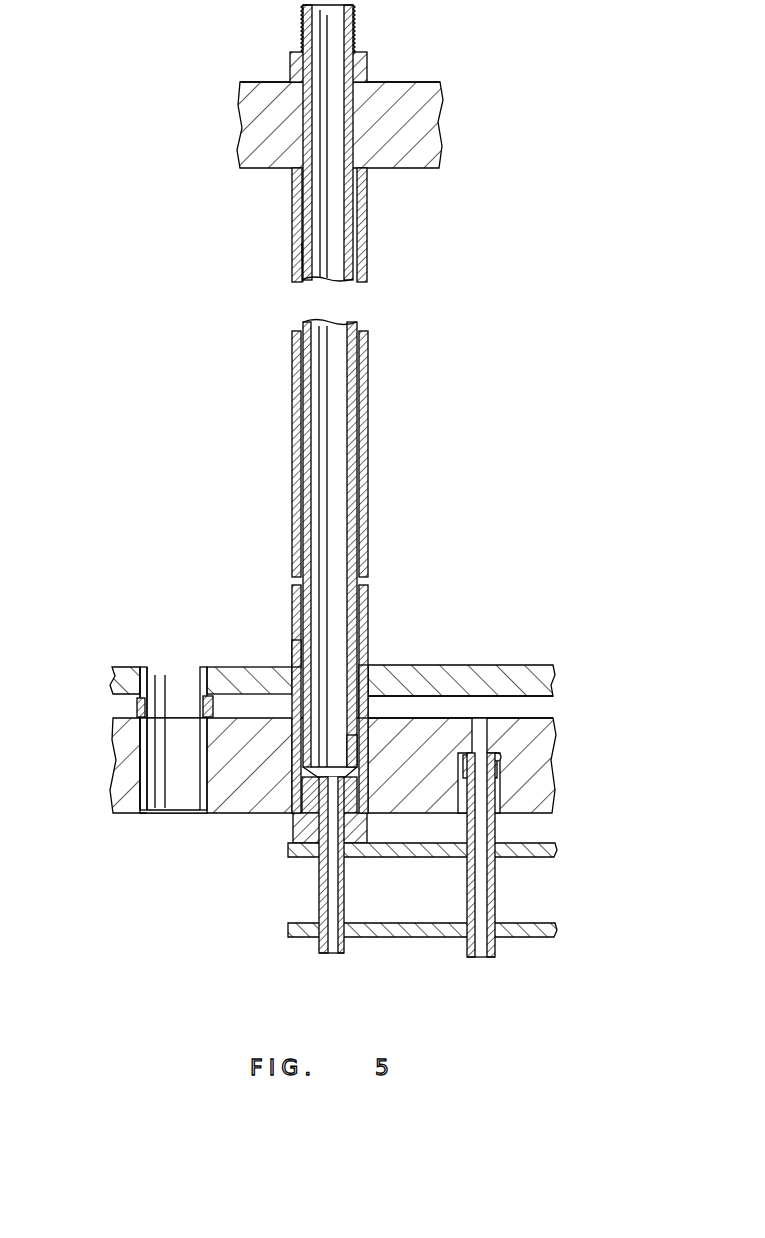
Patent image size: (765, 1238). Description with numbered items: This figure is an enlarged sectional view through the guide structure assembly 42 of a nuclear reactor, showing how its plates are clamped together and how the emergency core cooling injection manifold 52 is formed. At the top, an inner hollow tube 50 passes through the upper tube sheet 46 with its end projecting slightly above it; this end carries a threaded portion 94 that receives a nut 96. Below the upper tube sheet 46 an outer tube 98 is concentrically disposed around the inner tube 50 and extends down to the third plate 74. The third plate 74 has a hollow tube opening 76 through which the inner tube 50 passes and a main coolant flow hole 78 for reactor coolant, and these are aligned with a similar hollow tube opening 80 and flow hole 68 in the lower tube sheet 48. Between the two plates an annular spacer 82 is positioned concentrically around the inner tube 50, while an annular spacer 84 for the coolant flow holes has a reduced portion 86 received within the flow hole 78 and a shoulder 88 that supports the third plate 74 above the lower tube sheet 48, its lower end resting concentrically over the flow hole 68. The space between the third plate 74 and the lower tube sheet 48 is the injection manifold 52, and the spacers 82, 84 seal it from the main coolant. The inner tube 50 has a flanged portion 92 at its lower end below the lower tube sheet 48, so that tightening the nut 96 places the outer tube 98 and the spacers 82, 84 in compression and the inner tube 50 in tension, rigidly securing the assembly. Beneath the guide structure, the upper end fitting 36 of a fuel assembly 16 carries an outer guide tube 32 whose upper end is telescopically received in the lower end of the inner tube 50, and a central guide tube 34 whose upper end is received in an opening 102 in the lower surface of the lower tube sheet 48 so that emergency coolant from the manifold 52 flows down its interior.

The fuel assembly 16 is at (423, 937).
The outer guide tube 32 is at (318, 878).
The central guide tube 34 is at (497, 903).
The upper end fitting 36 is at (388, 938).
The guide structure assembly 42 is at (410, 167).
The upper tube sheet 46 is at (262, 84).
The lower tube sheet 48 is at (543, 791).
The hollow tube 50 is at (362, 383).
The injection manifold 52 is at (514, 707).
The flow hole 68 is at (200, 800).
The third plate 74 is at (500, 665).
The hollow tube opening 76 is at (300, 656).
The main coolant flow hole 78 is at (203, 675).
The hollow tube opening 80 is at (345, 744).
The annular spacer 82 is at (370, 693).
The annular spacer 84 is at (139, 709).
The reduced portion 86 is at (141, 667).
The shoulder 88 is at (138, 690).
The flanged portion 92 is at (292, 836).
The threaded portion 94 is at (353, 32).
The nut 96 is at (367, 74).
The outer tube 98 is at (368, 466).
The opening 102 is at (497, 755).